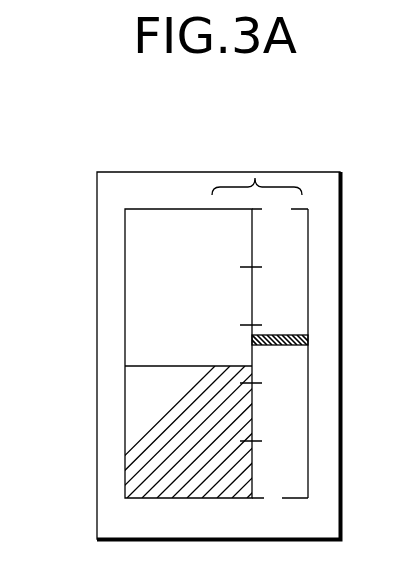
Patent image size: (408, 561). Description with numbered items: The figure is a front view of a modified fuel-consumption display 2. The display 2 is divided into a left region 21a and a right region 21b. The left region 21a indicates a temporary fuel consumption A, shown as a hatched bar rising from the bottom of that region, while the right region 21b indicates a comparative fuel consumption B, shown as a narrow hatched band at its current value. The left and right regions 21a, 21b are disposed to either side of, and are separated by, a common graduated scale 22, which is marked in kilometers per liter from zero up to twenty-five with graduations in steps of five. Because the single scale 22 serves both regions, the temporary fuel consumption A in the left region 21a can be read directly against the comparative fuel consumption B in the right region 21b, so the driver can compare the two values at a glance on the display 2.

The display 2 is at (88, 500).
The left region 21a is at (125, 295).
The right region 21b is at (308, 282).
The common graduated scale 22 is at (256, 176).
The temporary fuel consumption A is at (125, 393).
The comparative fuel consumption B is at (308, 340).